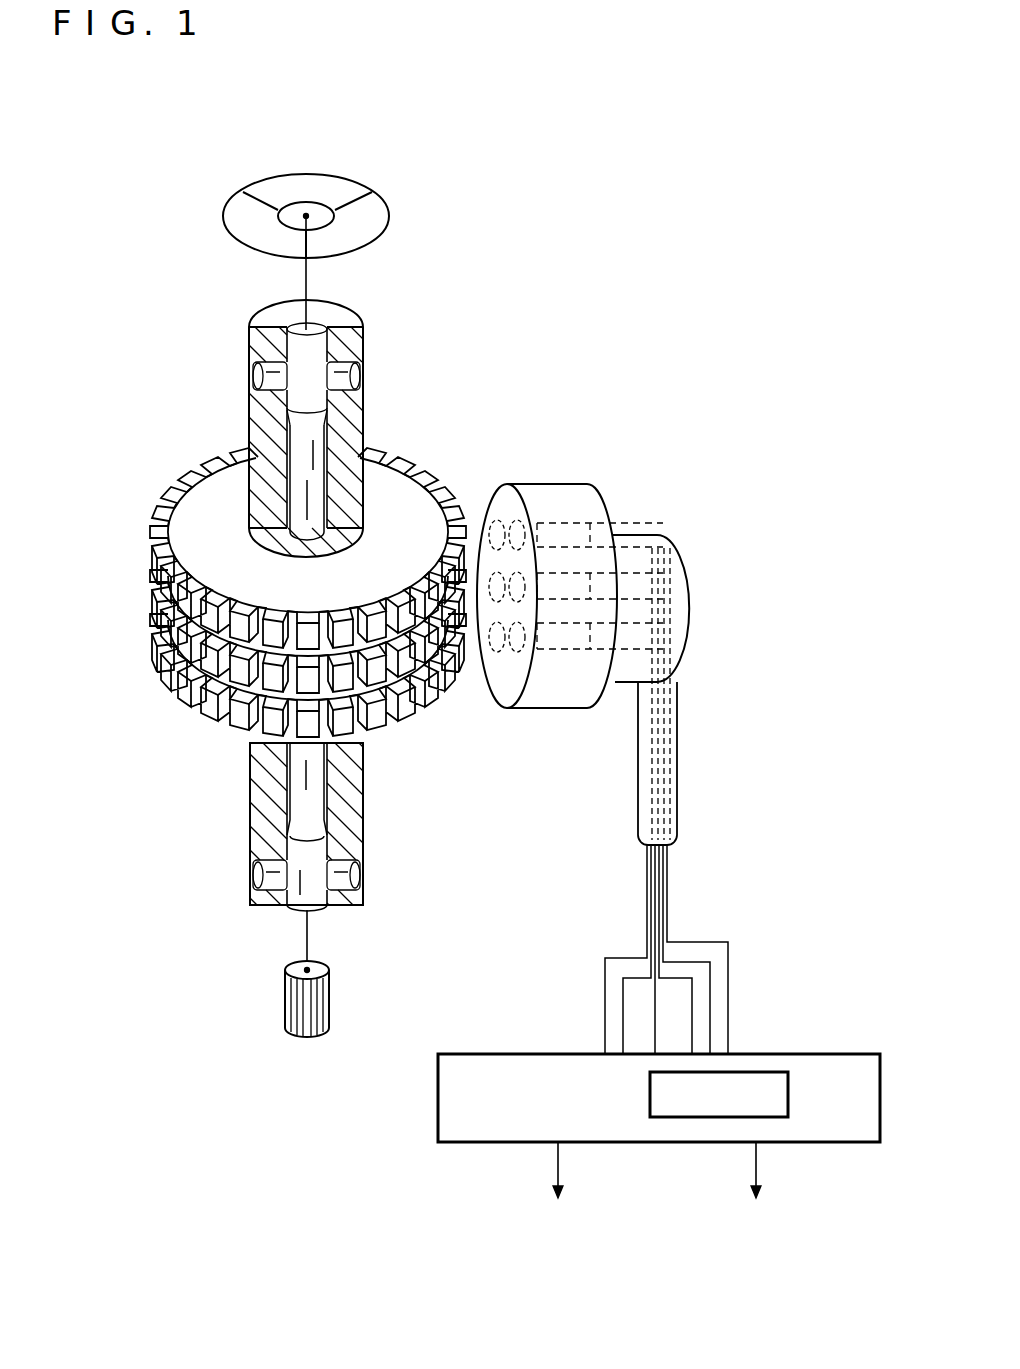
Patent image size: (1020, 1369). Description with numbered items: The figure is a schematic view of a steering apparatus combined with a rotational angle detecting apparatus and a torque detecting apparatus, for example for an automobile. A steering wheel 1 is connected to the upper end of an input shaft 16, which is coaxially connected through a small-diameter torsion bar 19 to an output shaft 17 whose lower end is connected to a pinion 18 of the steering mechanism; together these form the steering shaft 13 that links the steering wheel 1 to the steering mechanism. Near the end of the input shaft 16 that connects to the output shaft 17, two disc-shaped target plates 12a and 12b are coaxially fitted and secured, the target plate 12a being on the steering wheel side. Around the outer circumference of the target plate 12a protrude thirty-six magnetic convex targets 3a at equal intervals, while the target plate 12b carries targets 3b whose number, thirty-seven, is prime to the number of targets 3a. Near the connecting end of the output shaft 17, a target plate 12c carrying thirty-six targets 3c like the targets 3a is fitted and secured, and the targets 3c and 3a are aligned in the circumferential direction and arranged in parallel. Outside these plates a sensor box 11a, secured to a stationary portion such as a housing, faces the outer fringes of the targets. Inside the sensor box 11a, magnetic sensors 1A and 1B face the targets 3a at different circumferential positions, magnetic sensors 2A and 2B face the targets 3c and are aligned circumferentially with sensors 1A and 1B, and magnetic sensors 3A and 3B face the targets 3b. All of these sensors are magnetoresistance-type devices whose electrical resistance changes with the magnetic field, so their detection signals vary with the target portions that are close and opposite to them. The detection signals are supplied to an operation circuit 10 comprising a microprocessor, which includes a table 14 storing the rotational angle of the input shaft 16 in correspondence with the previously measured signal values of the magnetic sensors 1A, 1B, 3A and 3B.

The steering wheel 1 is at (392, 203).
The steering shaft 13 is at (372, 354).
The input shaft 16 is at (358, 407).
The torsion bar 19 is at (297, 445).
The target plate 12a is at (197, 502).
The targets 3a is at (147, 521).
The target plate 12b is at (185, 608).
The targets 3b is at (148, 628).
The target plate 12c is at (163, 660).
The targets 3c is at (165, 703).
The output shaft 17 is at (363, 818).
The pinion 18 is at (330, 1000).
The sensor box 11a is at (597, 506).
The magnetic sensor 1A is at (515, 515).
The magnetic sensor 1B is at (490, 500).
The magnetic sensor 3A is at (672, 603).
The magnetic sensor 3B is at (665, 573).
The magnetic sensor 2A is at (672, 660).
The magnetic sensor 2B is at (672, 628).
The operation circuit 10 is at (438, 1086).
The table 14 is at (790, 1093).